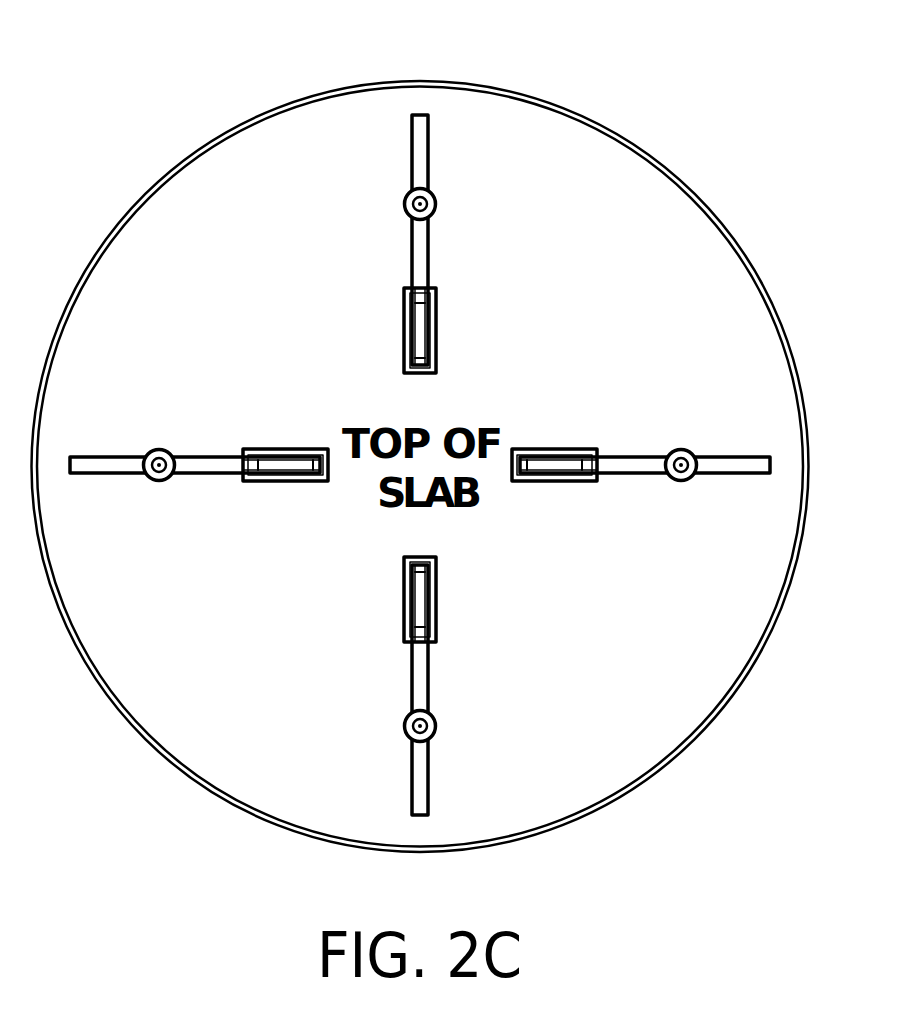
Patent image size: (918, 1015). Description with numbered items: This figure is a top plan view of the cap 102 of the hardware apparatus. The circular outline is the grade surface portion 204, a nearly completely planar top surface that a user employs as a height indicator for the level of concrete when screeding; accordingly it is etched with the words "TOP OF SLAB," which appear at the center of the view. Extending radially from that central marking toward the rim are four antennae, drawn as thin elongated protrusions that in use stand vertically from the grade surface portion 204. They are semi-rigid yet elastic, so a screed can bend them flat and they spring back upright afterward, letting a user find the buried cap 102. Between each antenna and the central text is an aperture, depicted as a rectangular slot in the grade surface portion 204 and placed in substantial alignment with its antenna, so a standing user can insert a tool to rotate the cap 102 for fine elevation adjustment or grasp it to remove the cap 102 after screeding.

The cap 102 is at (692, 78).
The grade surface portion 204 is at (765, 325).